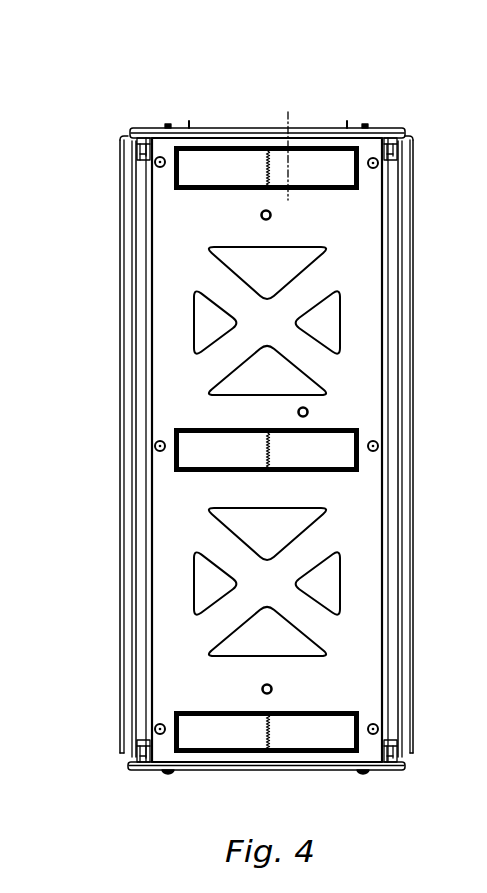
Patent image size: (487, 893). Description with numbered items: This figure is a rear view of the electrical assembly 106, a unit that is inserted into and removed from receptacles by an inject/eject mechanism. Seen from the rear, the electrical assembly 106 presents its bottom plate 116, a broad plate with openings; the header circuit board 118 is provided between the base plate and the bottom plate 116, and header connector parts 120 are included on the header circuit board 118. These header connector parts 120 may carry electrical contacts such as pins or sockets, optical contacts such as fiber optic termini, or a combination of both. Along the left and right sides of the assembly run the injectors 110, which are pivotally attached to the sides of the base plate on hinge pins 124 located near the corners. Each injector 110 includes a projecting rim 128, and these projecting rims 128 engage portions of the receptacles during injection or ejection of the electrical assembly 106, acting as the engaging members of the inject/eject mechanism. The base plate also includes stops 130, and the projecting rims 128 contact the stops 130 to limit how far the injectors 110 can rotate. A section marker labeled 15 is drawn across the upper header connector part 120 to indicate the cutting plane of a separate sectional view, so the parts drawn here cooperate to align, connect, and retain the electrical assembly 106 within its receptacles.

The electrical assembly 106 is at (186, 82).
The injectors 110 is at (128, 409).
The bottom plate 116 is at (370, 650).
The header circuit board 118 is at (306, 256).
The header connector parts 120 is at (318, 738).
The hinge pins 124 is at (404, 140).
The projecting rims 128 is at (128, 567).
The stops 130 is at (147, 347).
The section line 15 is at (288, 124).